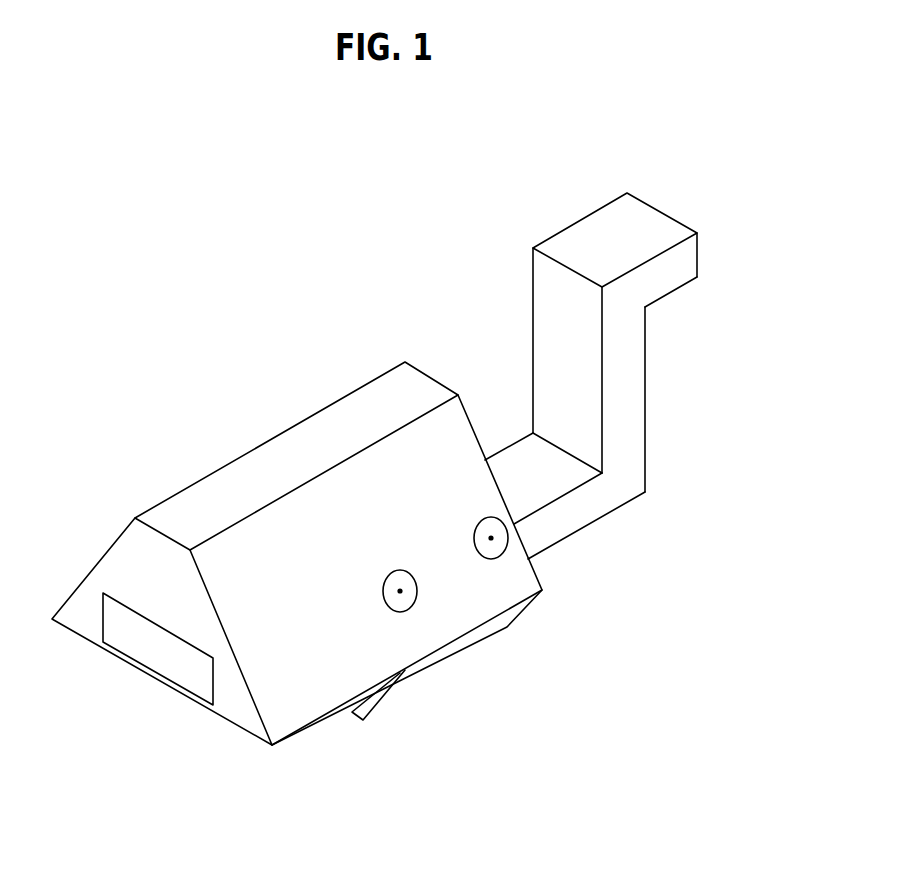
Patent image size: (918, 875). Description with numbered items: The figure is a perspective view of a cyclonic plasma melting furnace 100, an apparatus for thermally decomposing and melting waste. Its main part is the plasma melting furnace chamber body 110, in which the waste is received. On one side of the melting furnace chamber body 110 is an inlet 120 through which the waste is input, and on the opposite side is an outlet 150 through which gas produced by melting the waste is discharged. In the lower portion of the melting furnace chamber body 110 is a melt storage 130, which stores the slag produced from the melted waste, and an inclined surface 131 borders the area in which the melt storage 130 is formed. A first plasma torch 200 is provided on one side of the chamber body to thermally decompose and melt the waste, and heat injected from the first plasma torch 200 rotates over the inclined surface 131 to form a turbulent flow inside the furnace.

The cyclonic plasma melting furnace 100 is at (152, 179).
The plasma melting furnace chamber body 110 is at (232, 425).
The inlet 120 is at (180, 672).
The melt storage 130 is at (445, 660).
The inclined surface 131 is at (323, 723).
The outlet 150 is at (663, 220).
The first plasma torch 200 is at (495, 550).